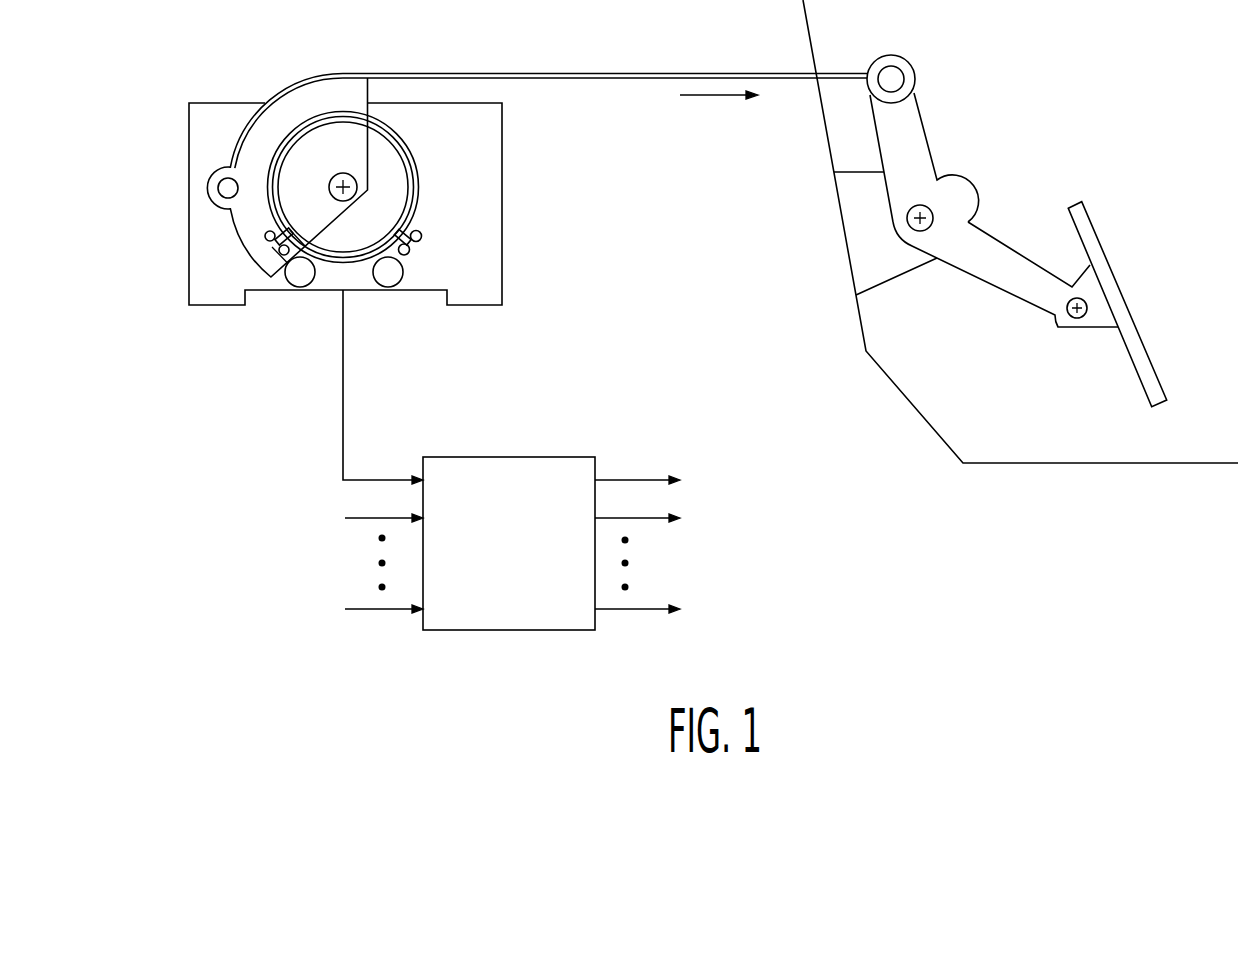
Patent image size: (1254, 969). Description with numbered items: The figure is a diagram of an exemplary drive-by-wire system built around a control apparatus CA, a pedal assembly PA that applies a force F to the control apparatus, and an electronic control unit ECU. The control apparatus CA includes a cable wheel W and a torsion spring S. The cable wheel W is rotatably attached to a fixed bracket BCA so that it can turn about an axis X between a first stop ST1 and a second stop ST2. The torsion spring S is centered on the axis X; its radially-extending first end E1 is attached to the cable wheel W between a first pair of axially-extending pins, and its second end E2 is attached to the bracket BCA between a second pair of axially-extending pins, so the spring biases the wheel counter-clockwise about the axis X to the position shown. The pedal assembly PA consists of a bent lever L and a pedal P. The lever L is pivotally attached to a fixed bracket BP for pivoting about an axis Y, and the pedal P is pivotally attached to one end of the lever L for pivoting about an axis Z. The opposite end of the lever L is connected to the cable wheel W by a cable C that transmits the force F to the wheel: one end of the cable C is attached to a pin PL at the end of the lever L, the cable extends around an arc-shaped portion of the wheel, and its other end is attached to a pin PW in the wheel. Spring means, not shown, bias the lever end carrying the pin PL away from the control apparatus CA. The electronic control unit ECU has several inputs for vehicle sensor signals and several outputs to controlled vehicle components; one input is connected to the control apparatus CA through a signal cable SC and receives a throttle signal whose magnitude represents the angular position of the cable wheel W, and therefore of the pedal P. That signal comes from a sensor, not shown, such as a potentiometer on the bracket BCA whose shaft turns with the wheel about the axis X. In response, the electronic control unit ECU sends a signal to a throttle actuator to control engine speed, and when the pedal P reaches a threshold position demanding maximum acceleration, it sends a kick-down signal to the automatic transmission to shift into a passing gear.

The cable wheel W is at (332, 93).
The cable C is at (651, 73).
The force F is at (719, 108).
The control apparatus CA is at (518, 236).
The fixed bracket BCA is at (480, 188).
The pin PW is at (220, 192).
The torsion spring S is at (408, 153).
The axis X is at (331, 189).
The first end E1 is at (268, 246).
The second end E2 is at (420, 244).
The first stop ST1 is at (300, 287).
The second stop ST2 is at (390, 287).
The signal cable SC is at (343, 406).
The electronic control unit ECU is at (631, 543).
The pedal assembly PA is at (1043, 114).
The pin PL is at (893, 75).
The fixed bracket BP is at (862, 238).
The axis Y is at (926, 208).
The bent lever L is at (1026, 285).
The axis Z is at (1069, 309).
The pedal P is at (1138, 351).